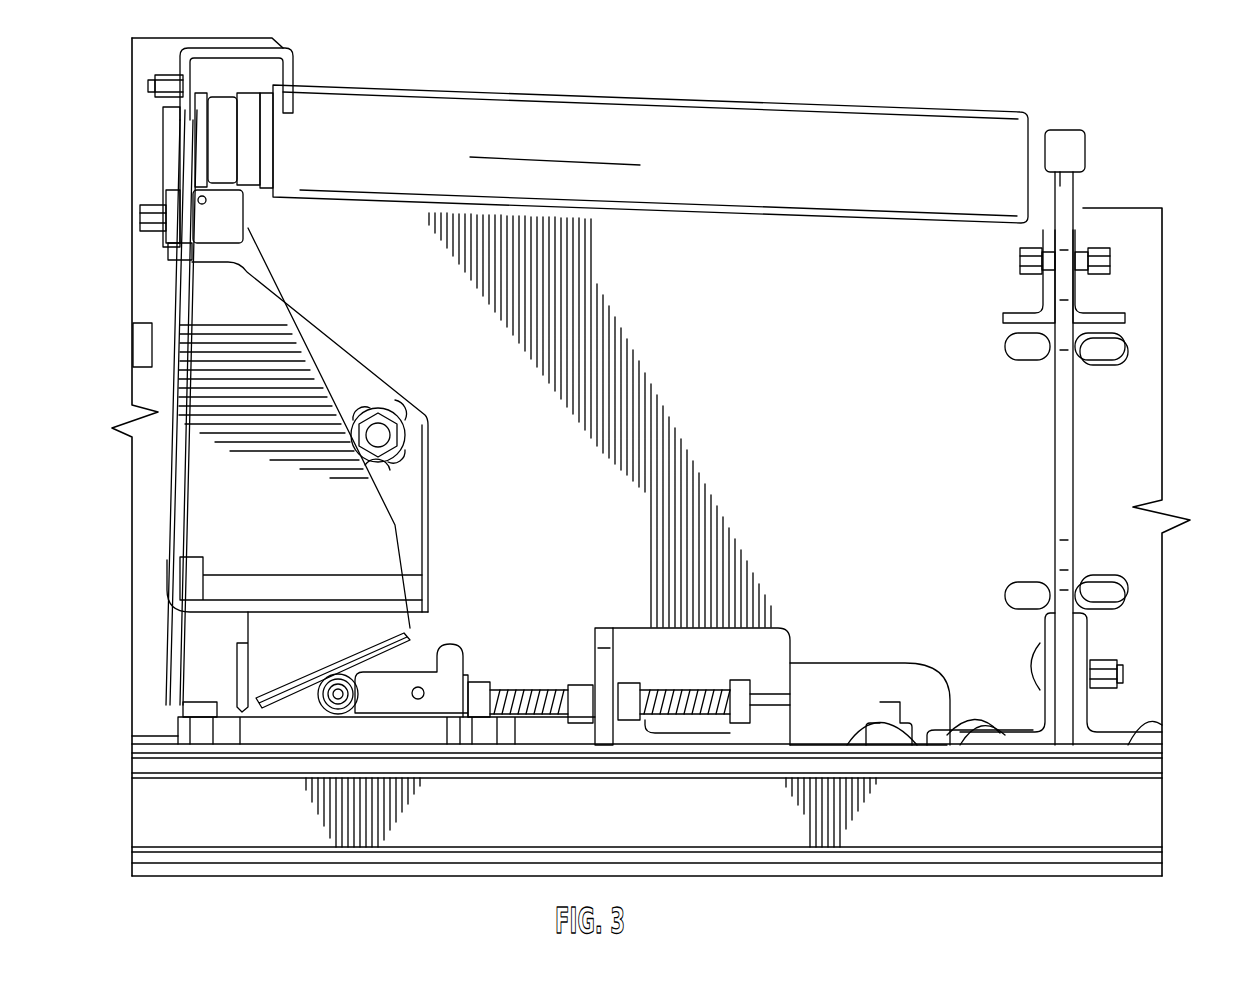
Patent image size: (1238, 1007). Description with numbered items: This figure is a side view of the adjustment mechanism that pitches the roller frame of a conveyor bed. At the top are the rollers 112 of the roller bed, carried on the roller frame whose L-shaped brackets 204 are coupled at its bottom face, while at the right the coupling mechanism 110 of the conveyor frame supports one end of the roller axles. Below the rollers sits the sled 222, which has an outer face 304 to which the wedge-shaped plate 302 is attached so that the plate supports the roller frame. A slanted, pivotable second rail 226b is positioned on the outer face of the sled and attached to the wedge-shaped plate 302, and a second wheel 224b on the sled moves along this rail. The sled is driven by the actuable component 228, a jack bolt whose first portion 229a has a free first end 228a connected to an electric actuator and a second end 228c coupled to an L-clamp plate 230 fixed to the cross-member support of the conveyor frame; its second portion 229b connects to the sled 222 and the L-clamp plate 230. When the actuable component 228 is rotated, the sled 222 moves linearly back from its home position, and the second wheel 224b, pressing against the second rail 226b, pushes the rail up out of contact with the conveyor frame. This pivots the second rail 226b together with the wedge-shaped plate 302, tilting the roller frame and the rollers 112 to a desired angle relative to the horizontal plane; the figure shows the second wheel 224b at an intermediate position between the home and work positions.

The coupling mechanism 110 is at (1078, 223).
The rollers 112 is at (776, 126).
The brackets 204 is at (215, 300).
The sled 222 is at (455, 670).
The second wheel 224b is at (343, 704).
The second rail 226b is at (410, 630).
The actuable component 228 is at (690, 705).
The first end 228a is at (742, 694).
The second end 228c is at (630, 705).
The first portion 229a is at (684, 722).
The second portion 229b is at (577, 673).
The L-clamp plate 230 is at (777, 653).
The wedge-shaped plate 302 is at (262, 667).
The outer face 304 is at (425, 657).